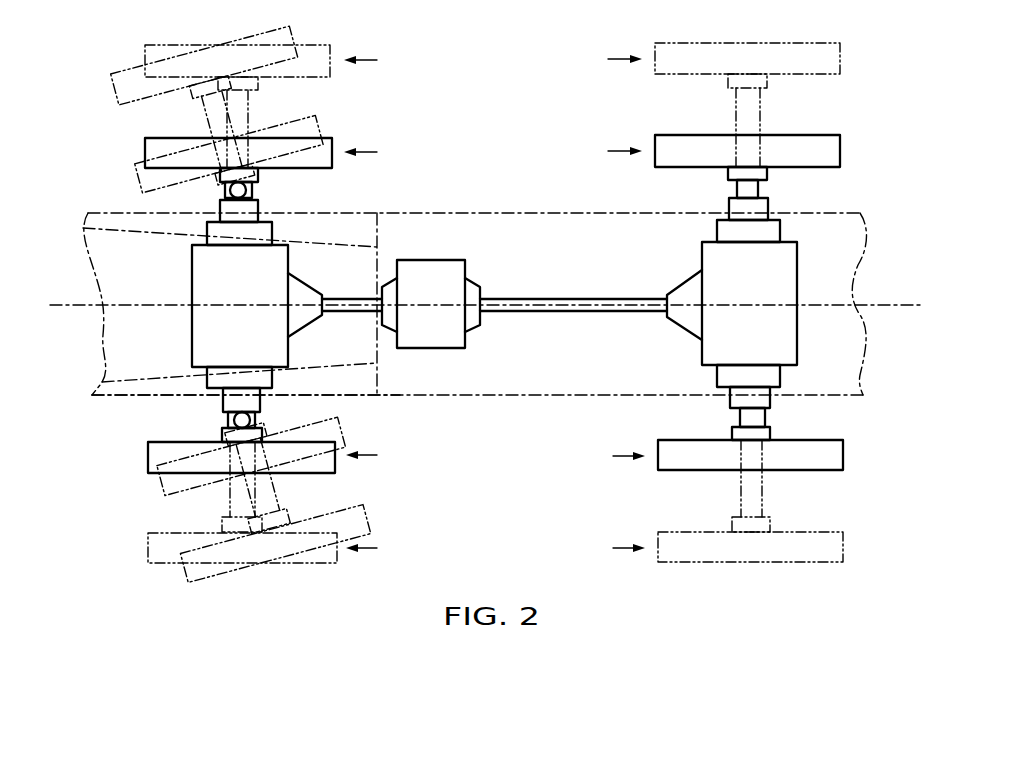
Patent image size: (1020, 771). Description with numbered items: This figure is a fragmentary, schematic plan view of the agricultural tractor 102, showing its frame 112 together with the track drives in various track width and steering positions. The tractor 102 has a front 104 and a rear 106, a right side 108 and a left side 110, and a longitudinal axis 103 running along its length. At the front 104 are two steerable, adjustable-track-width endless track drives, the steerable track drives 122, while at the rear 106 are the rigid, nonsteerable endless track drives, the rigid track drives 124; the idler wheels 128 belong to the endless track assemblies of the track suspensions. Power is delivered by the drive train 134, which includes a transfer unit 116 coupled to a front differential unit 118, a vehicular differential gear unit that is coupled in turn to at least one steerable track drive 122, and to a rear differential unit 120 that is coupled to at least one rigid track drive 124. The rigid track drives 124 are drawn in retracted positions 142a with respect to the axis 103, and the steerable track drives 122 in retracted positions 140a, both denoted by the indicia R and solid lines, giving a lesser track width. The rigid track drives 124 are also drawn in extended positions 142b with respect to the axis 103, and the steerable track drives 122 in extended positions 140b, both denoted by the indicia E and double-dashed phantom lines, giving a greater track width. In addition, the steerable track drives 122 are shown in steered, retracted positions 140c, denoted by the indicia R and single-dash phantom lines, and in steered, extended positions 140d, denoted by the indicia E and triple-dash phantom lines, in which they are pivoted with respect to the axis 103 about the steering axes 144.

The tractor 102 is at (139, 585).
The longitudinal axis 103 is at (137, 305).
The front 104 is at (96, 337).
The rear 106 is at (913, 341).
The right side 108 is at (553, 203).
The left side 110 is at (539, 441).
The frame 112 is at (582, 397).
The transfer unit 116 is at (449, 318).
The front differential unit 118 is at (263, 321).
The rear differential unit 120 is at (766, 319).
The steerable track drives 122 is at (146, 117).
The rigid track drives 124 is at (828, 118).
The idler wheels 128 is at (467, 0).
The drive train 134 is at (497, 348).
The retracted positions 140a is at (332, 168).
The extended positions 140b is at (333, 77).
The steered, retracted positions 140c is at (230, 159).
The steered, extended positions 140d is at (313, 118).
The retracted positions 142a is at (840, 135).
The extended positions 142b is at (748, 43).
The steering axes 144 is at (229, 191).